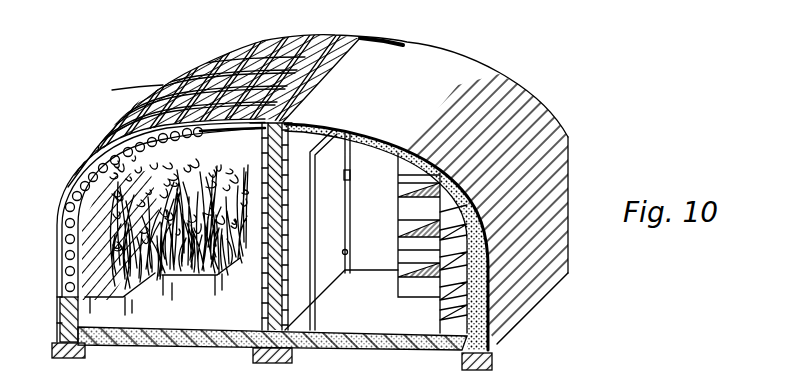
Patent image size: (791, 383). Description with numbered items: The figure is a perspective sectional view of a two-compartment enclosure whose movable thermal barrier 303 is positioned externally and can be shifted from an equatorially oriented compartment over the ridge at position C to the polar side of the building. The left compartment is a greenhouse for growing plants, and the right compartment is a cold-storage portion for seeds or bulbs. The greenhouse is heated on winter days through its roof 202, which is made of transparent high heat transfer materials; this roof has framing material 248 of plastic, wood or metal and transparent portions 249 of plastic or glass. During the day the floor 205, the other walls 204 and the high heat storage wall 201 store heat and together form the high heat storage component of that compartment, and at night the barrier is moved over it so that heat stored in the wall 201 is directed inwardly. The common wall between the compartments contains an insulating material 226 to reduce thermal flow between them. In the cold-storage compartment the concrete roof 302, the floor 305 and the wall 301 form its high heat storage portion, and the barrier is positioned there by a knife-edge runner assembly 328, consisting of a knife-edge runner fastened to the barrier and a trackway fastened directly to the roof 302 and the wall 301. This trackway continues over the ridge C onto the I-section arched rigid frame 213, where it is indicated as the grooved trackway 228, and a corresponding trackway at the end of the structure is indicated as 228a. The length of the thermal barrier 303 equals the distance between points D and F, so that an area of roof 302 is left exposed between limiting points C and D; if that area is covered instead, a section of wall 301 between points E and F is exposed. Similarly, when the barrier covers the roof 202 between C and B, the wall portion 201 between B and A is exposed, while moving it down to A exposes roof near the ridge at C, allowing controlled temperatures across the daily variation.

The high heat storage wall 201 is at (84, 325).
The roof 202 is at (240, 62).
The walls 204 is at (257, 237).
The floor 205 is at (150, 323).
The arched rigid frame 213 is at (69, 177).
The insulating material 226 is at (280, 307).
The grooved trackway 228 is at (57, 213).
The trackway 228a is at (208, 57).
The roof framing material 248 is at (120, 93).
The transparent portions 249 is at (287, 57).
The high heat storage wall 301 is at (490, 309).
The roof 302 is at (423, 160).
The movable thermal barrier 303 is at (552, 94).
The floor 305 is at (418, 337).
The knife-edge runner assembly 328 is at (562, 296).
The point A is at (57, 323).
The point B is at (57, 296).
The ridge position C is at (330, 125).
The point D is at (368, 118).
The point E is at (569, 230).
The point F is at (569, 262).